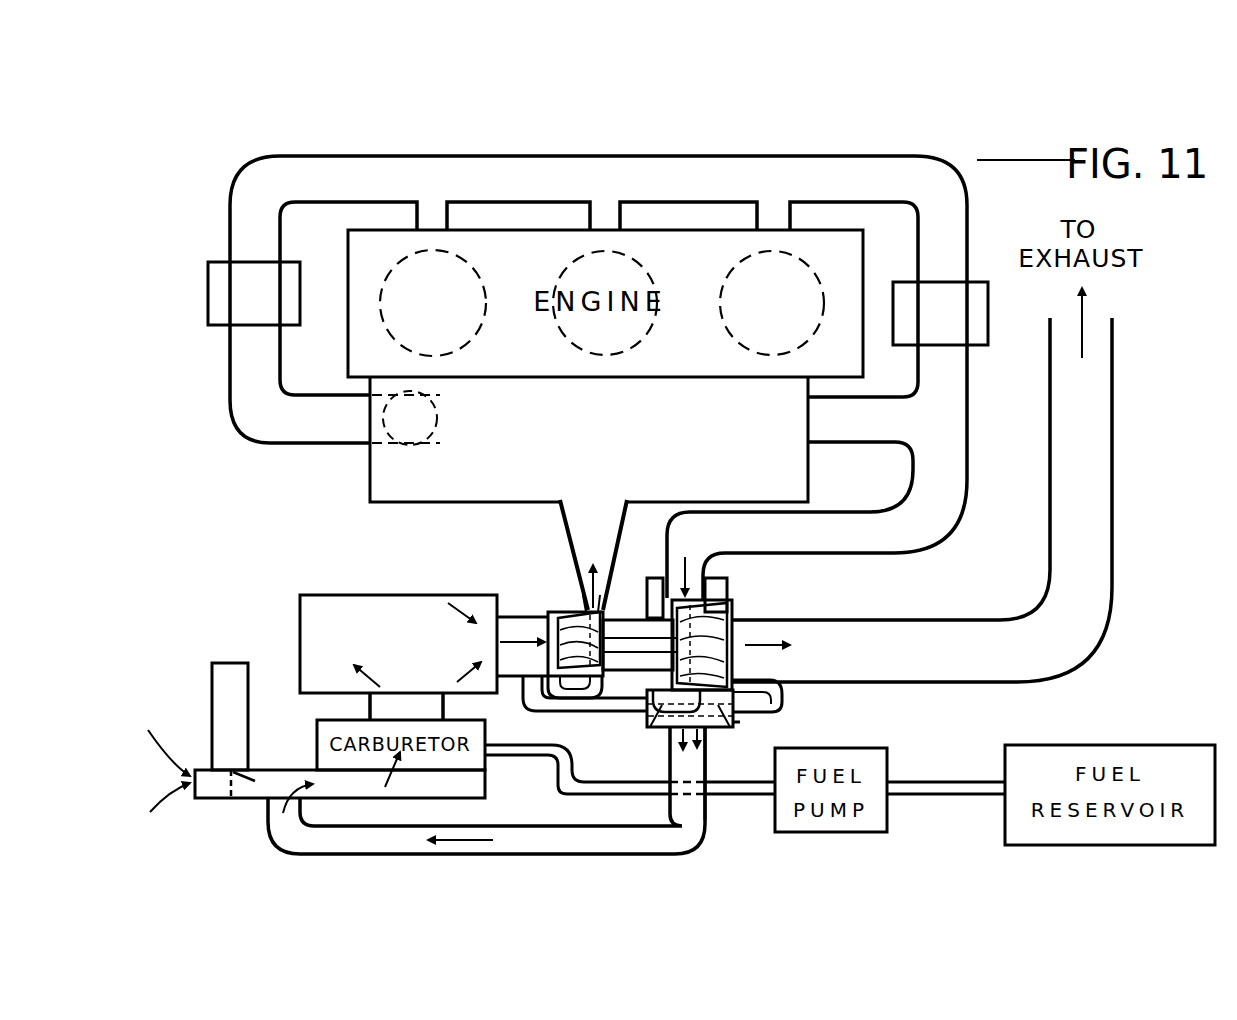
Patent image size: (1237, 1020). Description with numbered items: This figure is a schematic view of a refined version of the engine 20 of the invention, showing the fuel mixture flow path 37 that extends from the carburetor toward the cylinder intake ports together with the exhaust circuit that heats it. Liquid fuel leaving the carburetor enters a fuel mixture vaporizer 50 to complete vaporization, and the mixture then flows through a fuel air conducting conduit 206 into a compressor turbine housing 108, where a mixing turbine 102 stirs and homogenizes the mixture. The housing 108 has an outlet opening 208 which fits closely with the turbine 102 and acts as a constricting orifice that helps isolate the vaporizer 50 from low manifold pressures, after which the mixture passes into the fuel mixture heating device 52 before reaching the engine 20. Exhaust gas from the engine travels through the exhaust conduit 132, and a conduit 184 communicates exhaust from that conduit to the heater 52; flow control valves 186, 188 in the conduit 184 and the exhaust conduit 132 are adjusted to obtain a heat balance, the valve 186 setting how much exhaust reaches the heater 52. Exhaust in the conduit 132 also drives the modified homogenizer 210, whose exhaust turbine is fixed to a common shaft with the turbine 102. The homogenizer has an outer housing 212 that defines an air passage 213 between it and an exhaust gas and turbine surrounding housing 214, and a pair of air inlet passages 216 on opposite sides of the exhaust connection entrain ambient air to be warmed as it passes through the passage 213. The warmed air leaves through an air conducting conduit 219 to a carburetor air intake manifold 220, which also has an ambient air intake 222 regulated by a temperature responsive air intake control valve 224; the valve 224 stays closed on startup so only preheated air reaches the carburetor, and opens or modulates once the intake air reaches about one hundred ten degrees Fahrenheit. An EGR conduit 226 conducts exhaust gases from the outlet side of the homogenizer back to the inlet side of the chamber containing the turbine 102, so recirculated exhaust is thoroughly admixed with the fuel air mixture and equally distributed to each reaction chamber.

The engine 20 is at (640, 150).
The conduit 184 is at (230, 214).
The flow control valve 186 is at (210, 275).
The flow control valve 188 is at (988, 328).
The fuel mixture heating device 52 is at (808, 466).
The exhaust conduit 132 is at (868, 554).
The fuel mixture flow path 37 is at (562, 537).
The outlet opening 208 is at (583, 597).
The mixing turbine 102 is at (573, 613).
The turbine housing 108 is at (575, 700).
The modified homogenizer 210 is at (742, 606).
The air inlet passages 216 is at (646, 584).
The EGR conduit 226 is at (786, 690).
The fuel air conducting conduit 206 is at (522, 690).
The air passage 213 is at (645, 724).
The homogenizer housing 212 is at (668, 740).
The exhaust gas and turbine surrounding housing 214 is at (734, 727).
The air conducting conduit 219 is at (625, 826).
The fuel mixture vaporizer 50 is at (344, 595).
The air intake control valve 224 is at (239, 663).
The ambient air intake 222 is at (186, 802).
The carburetor air intake manifold 220 is at (240, 798).